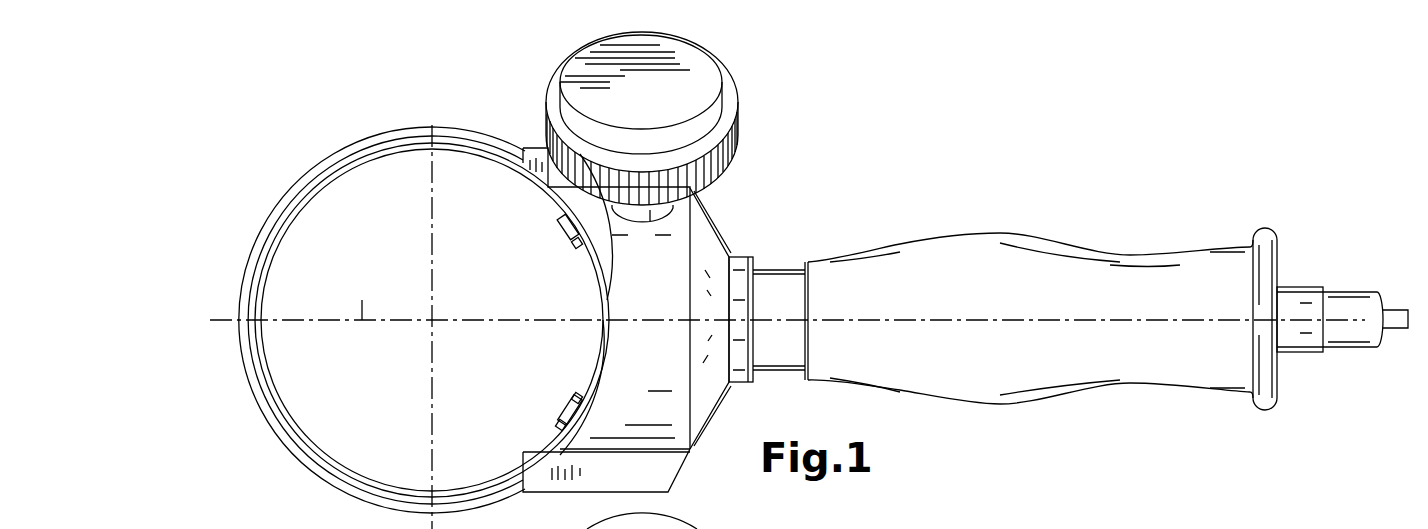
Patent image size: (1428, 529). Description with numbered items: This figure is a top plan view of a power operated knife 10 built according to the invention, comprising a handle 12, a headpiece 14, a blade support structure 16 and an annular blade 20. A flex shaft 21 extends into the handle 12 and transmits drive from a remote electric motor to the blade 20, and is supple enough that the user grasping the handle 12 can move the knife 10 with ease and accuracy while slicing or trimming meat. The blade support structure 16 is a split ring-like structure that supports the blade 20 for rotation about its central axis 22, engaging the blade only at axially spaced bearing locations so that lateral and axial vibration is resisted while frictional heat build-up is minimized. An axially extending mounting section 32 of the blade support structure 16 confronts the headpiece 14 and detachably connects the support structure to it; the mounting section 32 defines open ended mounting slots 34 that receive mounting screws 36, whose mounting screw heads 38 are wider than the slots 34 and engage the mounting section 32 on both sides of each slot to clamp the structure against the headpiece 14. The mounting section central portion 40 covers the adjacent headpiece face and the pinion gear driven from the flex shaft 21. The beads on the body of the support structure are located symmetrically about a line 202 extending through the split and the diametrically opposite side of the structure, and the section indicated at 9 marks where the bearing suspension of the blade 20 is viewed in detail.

The power operated knife 10 is at (876, 138).
The handle 12 is at (1026, 241).
The headpiece 14 is at (714, 229).
The blade support structure 16 is at (338, 493).
The annular blade 20 is at (413, 496).
The flex shaft 21 is at (1337, 288).
The central axis 22 is at (430, 317).
The mounting section 32 is at (597, 267).
The mounting slots 34 is at (565, 230).
The mounting screws 36 is at (567, 403).
The mounting screw heads 38 is at (572, 245).
The mounting section central portion 40 is at (600, 357).
The line 202 is at (362, 320).
The section line 9- 9 is at (432, 472).